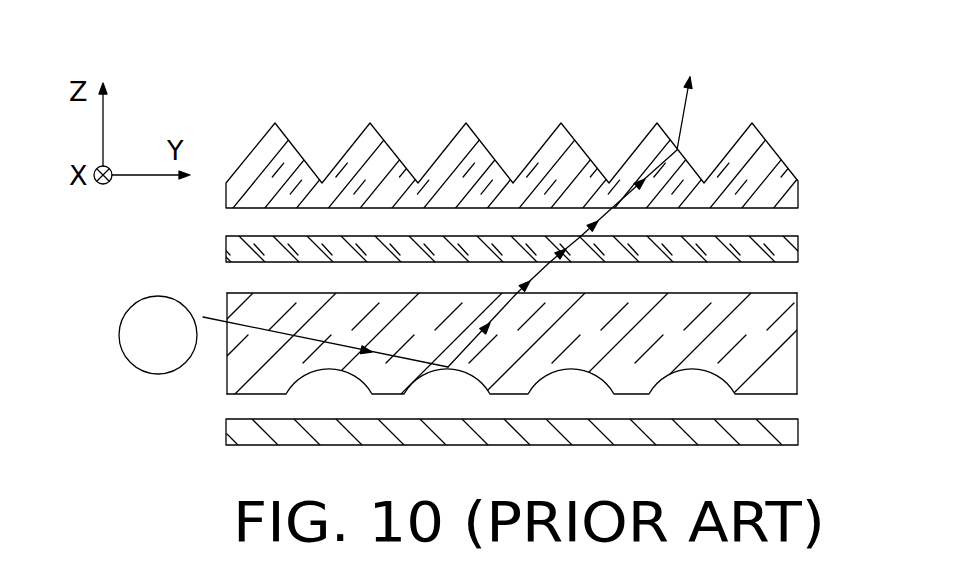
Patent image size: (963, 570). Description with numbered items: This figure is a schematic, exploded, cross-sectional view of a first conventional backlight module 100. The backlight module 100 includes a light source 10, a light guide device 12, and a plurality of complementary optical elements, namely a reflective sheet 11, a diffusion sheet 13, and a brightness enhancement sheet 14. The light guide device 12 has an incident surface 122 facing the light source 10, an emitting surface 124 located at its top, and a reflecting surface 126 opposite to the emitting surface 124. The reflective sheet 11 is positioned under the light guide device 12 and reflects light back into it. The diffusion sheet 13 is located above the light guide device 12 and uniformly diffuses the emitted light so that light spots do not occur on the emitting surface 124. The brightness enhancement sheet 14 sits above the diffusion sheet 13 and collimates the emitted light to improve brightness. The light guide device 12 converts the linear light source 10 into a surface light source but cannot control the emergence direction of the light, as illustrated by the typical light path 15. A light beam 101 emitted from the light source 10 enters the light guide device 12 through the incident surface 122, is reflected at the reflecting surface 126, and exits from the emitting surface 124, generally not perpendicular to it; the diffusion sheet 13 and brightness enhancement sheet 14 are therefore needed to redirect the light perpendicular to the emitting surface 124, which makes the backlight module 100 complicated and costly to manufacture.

The backlight module 100 is at (510, 79).
The light source 10 is at (145, 335).
The light beam 101 is at (224, 318).
The reflective sheet 11 is at (785, 433).
The light guide device 12 is at (783, 342).
The incident surface 122 is at (221, 371).
The emitting surface 124 is at (772, 292).
The reflecting surface 126 is at (784, 398).
The diffusion sheet 13 is at (770, 252).
The brightness enhancement sheet 14 is at (770, 165).
The light path 15 is at (685, 112).